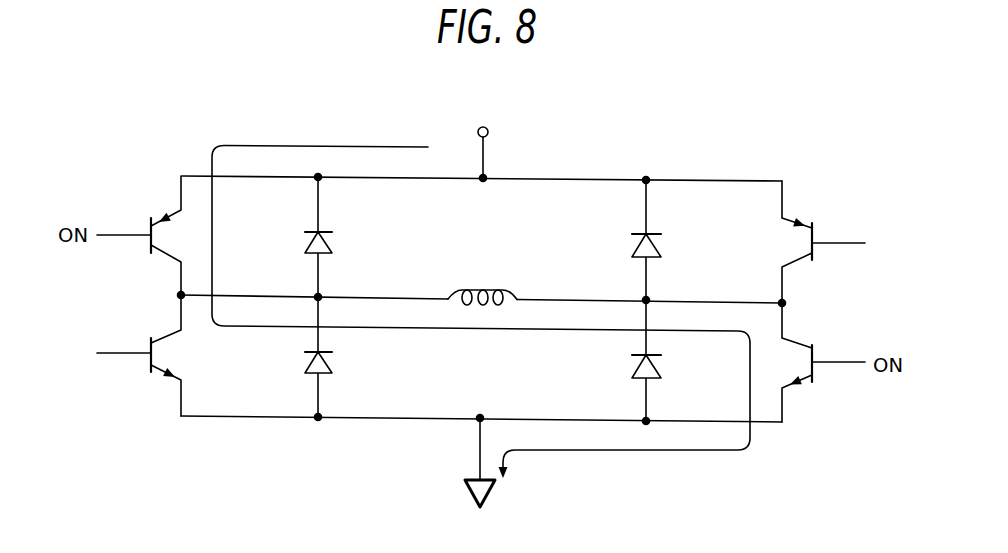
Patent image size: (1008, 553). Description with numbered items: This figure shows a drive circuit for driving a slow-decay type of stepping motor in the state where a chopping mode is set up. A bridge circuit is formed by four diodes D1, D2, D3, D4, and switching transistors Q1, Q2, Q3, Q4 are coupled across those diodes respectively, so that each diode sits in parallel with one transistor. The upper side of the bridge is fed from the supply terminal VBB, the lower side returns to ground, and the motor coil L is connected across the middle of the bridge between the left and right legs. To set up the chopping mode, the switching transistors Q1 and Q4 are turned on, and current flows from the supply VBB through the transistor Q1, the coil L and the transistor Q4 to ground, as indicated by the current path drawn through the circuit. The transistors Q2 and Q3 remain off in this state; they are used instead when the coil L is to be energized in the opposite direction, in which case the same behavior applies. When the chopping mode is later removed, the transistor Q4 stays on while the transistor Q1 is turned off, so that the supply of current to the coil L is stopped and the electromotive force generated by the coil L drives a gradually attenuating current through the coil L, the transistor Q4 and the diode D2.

The switching transistor Q1 is at (153, 235).
The switching transistor Q2 is at (152, 356).
The switching transistor Q3 is at (809, 242).
The switching transistor Q4 is at (809, 362).
The diode D1 is at (337, 237).
The diode D2 is at (337, 357).
The diode D3 is at (628, 240).
The diode D4 is at (628, 360).
The coil L is at (482, 284).
The supply voltage terminal VBB is at (483, 138).